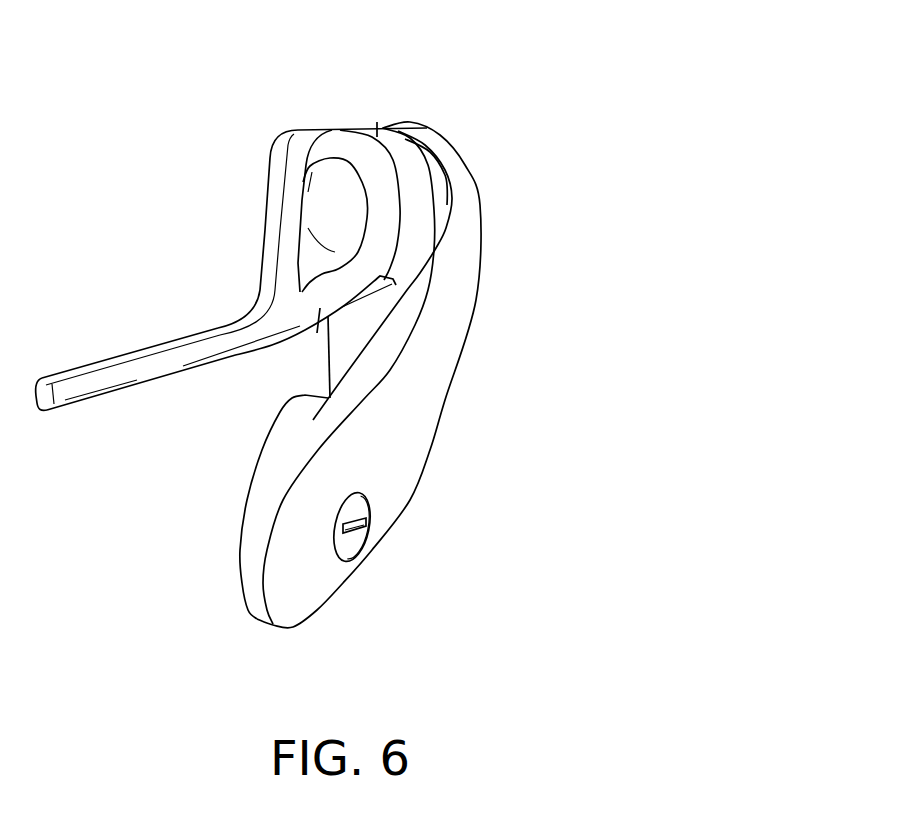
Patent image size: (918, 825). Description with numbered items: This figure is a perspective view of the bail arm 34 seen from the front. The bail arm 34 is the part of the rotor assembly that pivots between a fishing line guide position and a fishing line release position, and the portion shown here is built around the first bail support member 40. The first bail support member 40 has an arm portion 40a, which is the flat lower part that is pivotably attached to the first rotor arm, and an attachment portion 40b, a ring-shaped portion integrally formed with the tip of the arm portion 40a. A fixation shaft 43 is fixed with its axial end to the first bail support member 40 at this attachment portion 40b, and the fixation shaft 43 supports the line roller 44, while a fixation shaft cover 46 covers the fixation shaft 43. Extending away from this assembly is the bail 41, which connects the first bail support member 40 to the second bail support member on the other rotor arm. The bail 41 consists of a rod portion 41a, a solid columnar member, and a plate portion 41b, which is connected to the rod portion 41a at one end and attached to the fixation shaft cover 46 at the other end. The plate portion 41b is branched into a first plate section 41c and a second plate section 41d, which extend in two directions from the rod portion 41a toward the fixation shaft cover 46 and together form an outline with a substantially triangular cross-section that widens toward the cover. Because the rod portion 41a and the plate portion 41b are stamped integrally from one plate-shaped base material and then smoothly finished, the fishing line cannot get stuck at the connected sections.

The bail arm 34 is at (516, 130).
The first bail support member 40 is at (457, 303).
The arm portion 40a is at (435, 390).
The attachment portion 40b is at (469, 207).
The bail 41 is at (150, 314).
The rod portion 41a is at (86, 378).
The plate portion 41b is at (242, 283).
The first plate section 41c is at (290, 207).
The second plate section 41d is at (318, 313).
The fixation shaft 43 is at (329, 193).
The line roller 44 is at (436, 158).
The fixation shaft cover 46 is at (377, 127).